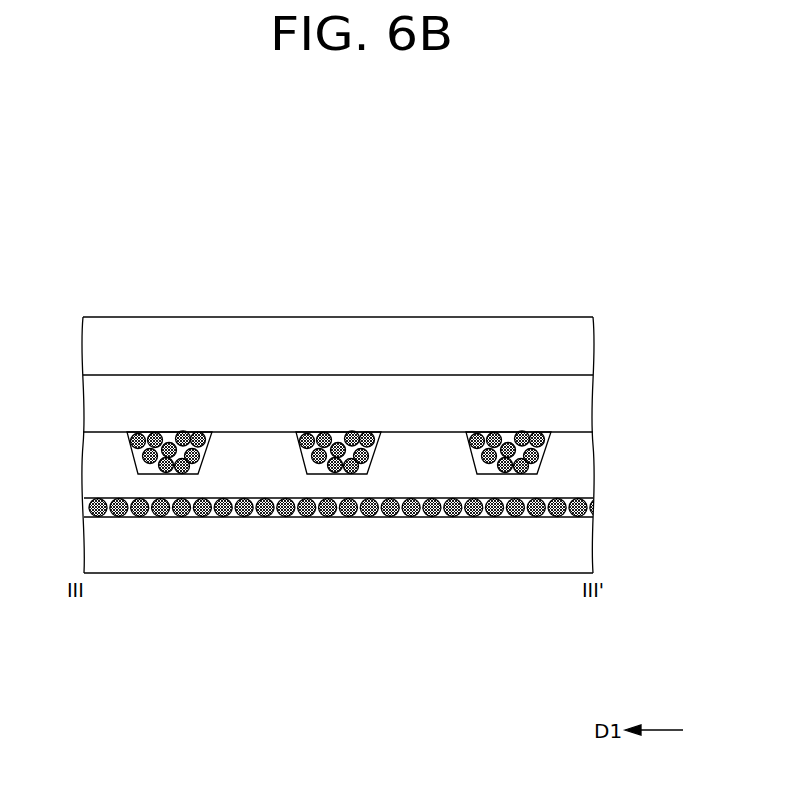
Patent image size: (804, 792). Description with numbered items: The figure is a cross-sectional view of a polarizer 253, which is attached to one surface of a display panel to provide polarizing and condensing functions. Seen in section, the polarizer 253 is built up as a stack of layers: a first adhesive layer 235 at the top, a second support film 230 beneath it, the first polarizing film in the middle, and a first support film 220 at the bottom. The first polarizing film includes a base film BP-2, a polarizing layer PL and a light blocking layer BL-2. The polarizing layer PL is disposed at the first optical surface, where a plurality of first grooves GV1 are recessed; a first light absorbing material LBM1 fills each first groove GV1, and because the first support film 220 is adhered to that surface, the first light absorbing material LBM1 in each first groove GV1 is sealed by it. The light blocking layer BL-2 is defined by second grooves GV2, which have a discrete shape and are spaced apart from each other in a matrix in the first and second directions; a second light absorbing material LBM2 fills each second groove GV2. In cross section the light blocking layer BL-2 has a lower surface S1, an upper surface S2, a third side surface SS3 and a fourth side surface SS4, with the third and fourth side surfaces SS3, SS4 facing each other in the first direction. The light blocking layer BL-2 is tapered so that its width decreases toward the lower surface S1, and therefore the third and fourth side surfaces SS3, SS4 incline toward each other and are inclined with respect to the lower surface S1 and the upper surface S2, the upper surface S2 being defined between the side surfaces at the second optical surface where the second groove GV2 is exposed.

The polarizer 253 is at (560, 245).
The first adhesive layer 235 is at (583, 344).
The second support film 230 is at (583, 398).
The first support film 220 is at (583, 542).
The base film BP-2 is at (587, 488).
The second light absorbing material LBM2 is at (546, 435).
The light blocking layer BL-2 is at (693, 430).
The first light absorbing material LBM1 is at (365, 514).
The polarizing layer PL is at (457, 661).
The first groove GV1 is at (101, 514).
The second groove GV2 is at (495, 440).
The fourth side surface SS4 is at (209, 439).
The third side surface SS3 is at (133, 455).
The upper surface S2 is at (138, 433).
The lower surface S1 is at (150, 473).